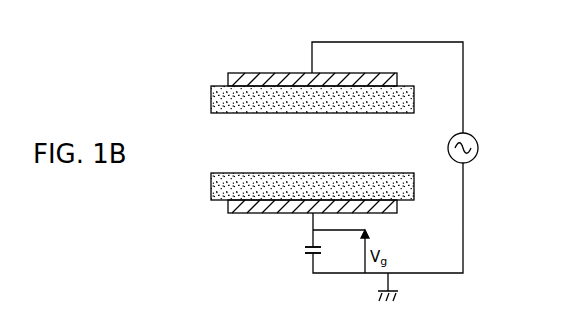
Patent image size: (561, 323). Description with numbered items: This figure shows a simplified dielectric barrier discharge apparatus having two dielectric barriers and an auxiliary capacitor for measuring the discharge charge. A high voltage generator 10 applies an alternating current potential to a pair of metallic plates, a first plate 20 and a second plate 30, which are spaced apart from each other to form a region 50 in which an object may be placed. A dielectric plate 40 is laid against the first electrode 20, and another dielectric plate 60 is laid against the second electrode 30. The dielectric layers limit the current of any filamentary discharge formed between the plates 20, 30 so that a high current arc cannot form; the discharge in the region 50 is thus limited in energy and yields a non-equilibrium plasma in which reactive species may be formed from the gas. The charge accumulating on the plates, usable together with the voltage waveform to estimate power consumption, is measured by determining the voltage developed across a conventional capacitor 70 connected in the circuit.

The high voltage generator 10 is at (476, 158).
The first plate 20 is at (345, 73).
The second plate 30 is at (241, 214).
The dielectric plate 40 is at (413, 86).
The region 50 is at (322, 154).
The dielectric plate 60 is at (225, 202).
The capacitor 70 is at (310, 257).